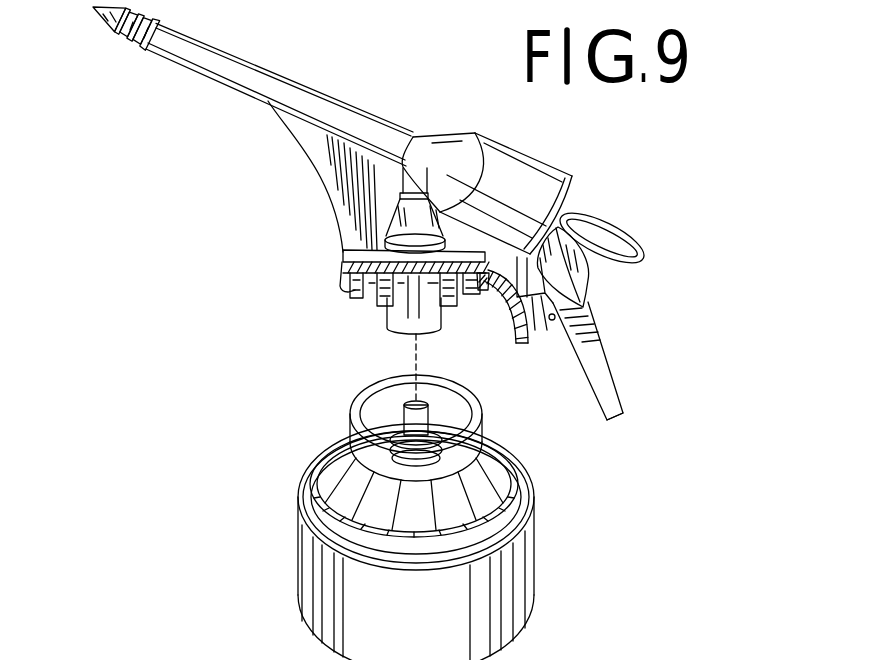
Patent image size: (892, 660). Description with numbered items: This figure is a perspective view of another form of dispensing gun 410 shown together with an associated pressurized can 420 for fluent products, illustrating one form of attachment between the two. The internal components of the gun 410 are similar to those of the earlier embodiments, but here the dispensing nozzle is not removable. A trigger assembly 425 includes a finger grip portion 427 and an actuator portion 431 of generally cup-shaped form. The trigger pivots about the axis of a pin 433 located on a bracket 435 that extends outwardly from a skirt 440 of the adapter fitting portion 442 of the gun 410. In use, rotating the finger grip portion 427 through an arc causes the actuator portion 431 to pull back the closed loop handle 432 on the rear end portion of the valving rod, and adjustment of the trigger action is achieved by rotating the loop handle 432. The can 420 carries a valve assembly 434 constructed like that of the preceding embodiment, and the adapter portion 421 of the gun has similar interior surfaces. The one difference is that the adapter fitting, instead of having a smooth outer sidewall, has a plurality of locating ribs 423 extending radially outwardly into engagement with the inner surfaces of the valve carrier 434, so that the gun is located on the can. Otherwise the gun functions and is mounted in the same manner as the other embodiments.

The gun 410 is at (645, 204).
The adapter portion 421 is at (297, 76).
The adapter fitting portion 442 is at (363, 252).
The locating ribs 423 is at (368, 292).
The skirt 440 is at (410, 331).
The bracket 435 is at (520, 370).
The pin 433 is at (552, 322).
The actuator portion 431 is at (583, 284).
The closed loop handle 432 is at (638, 255).
The trigger assembly 425 is at (610, 367).
The finger grip portion 427 is at (586, 392).
The can 420 is at (566, 528).
The valve assembly 434 is at (422, 486).